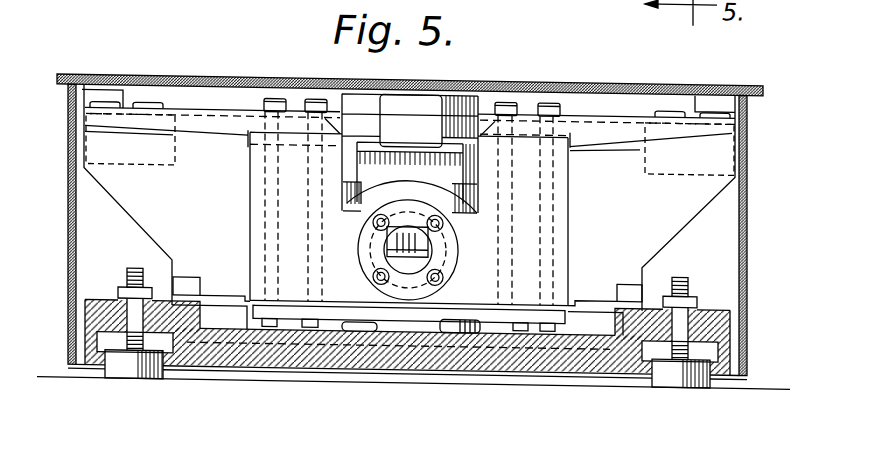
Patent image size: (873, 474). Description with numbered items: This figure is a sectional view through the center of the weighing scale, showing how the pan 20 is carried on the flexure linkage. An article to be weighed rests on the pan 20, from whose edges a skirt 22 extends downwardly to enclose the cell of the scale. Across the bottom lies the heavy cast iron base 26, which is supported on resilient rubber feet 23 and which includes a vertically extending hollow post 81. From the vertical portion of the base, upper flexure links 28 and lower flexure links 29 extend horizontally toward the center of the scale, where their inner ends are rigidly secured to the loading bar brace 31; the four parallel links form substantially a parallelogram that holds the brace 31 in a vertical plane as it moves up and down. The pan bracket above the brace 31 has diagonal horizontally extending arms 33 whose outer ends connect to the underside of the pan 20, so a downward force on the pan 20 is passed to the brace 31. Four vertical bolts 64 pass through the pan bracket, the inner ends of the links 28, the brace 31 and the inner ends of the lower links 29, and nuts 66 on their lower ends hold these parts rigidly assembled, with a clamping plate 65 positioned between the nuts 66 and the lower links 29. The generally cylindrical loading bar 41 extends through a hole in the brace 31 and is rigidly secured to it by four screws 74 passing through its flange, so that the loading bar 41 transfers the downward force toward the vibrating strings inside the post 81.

The pan 20 is at (655, 77).
The skirt 22 is at (747, 250).
The feet 23 is at (128, 367).
The base 26 is at (502, 351).
The upper flexure links 28 is at (100, 146).
The lower flexure links 29 is at (217, 293).
The loading bar brace 31 is at (568, 213).
The diagonal arms 33 is at (203, 106).
The loading bar 41 is at (417, 248).
The bolts 64 is at (315, 94).
The clamping plate 65 is at (460, 311).
The nuts 66 is at (305, 321).
The screws 74 is at (372, 265).
The hollow post 81 is at (350, 322).